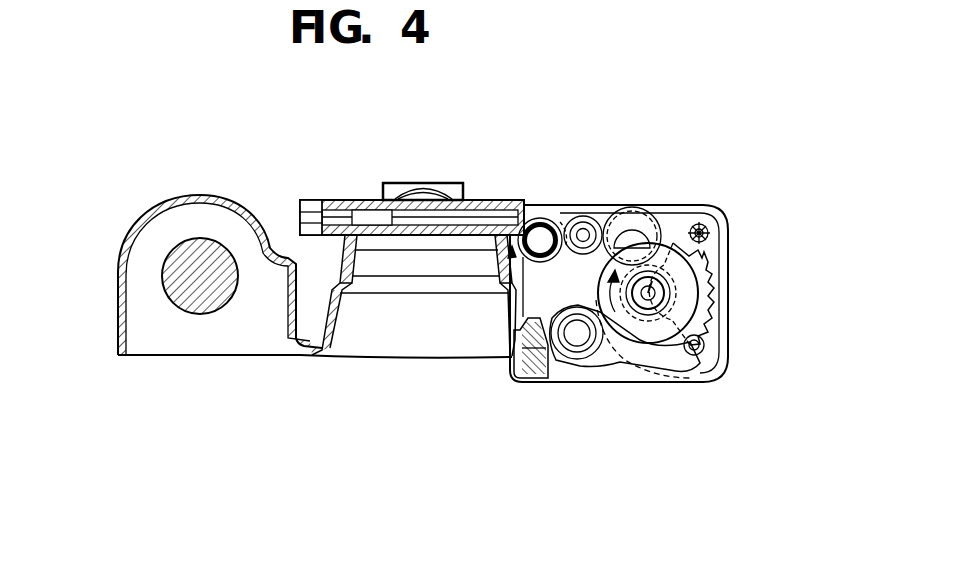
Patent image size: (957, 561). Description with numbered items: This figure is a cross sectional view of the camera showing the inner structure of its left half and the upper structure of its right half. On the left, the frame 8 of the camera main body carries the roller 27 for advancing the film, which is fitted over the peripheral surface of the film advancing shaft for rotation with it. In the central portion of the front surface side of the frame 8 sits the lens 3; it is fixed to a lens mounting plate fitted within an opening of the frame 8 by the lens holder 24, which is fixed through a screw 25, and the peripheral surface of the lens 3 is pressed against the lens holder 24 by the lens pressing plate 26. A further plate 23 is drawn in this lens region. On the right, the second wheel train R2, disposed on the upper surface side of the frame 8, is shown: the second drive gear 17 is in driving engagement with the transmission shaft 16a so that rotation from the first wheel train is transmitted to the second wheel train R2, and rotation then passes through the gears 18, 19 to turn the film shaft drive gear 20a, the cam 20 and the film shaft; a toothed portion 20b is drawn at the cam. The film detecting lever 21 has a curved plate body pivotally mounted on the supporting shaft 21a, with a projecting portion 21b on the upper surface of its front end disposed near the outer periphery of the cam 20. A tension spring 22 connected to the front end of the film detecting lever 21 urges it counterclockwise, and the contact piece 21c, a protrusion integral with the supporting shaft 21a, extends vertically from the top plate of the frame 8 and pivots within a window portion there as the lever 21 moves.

The lens 3 is at (422, 182).
The frame 8 is at (118, 333).
The transmission shaft 16a is at (545, 206).
The second drive gear 17 is at (562, 205).
The gear 18 is at (586, 205).
The gear 19 is at (640, 205).
The cam 20 is at (676, 368).
The film shaft drive gear 20a is at (690, 382).
The ratchet teeth 20b is at (722, 300).
The film detecting lever 21 is at (620, 380).
The supporting shaft 21a is at (561, 378).
The projecting portion 21b is at (708, 336).
The contact piece 21c is at (527, 378).
The tension spring 22 is at (710, 240).
The plate 23 is at (345, 200).
The lens holder 24 is at (305, 200).
The screw 25 is at (272, 205).
The lens pressing plate 26 is at (395, 180).
The roller 27 is at (168, 250).
The second wheel train R2 is at (608, 205).